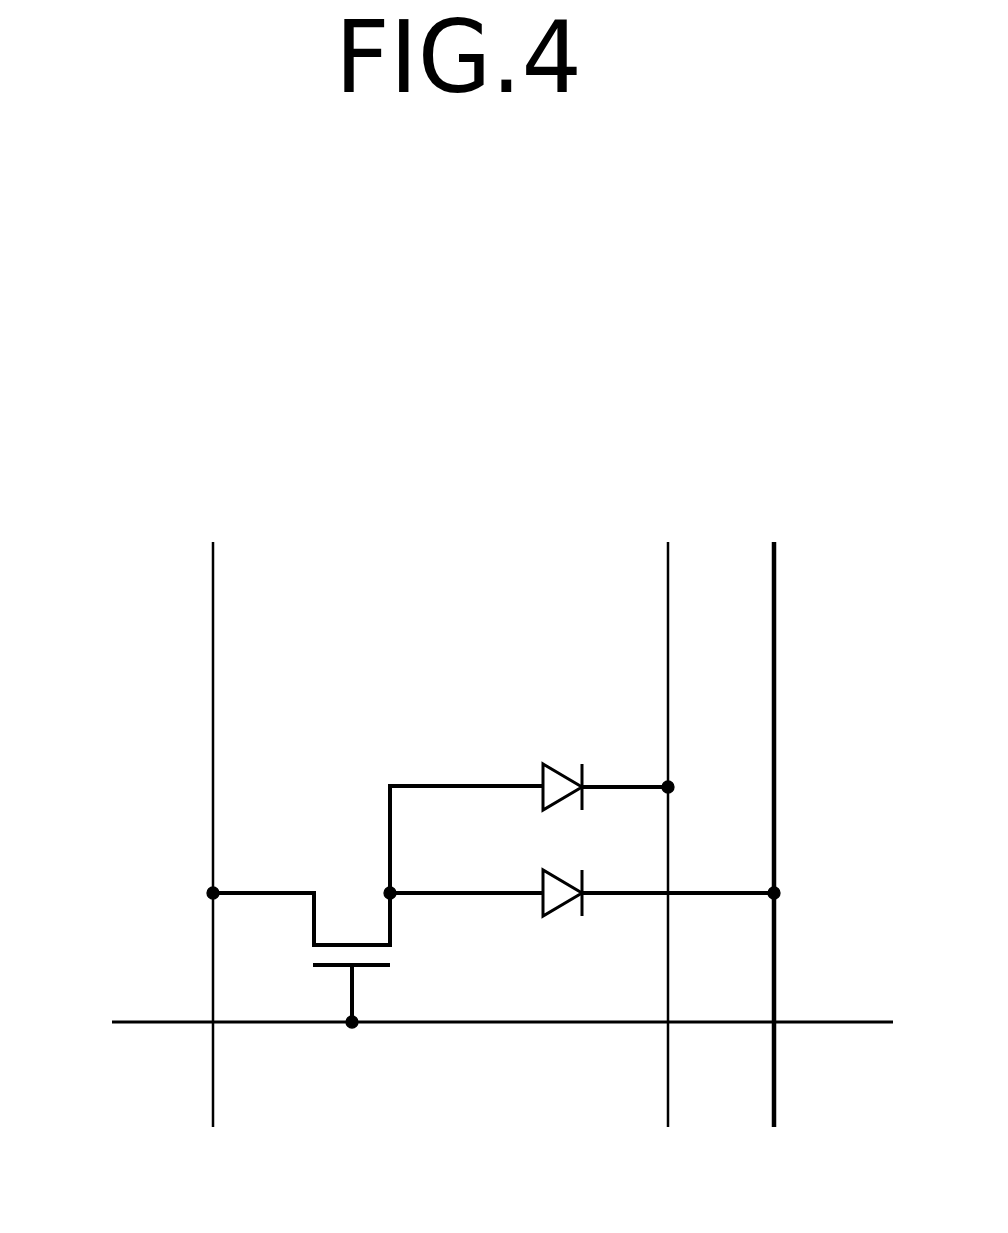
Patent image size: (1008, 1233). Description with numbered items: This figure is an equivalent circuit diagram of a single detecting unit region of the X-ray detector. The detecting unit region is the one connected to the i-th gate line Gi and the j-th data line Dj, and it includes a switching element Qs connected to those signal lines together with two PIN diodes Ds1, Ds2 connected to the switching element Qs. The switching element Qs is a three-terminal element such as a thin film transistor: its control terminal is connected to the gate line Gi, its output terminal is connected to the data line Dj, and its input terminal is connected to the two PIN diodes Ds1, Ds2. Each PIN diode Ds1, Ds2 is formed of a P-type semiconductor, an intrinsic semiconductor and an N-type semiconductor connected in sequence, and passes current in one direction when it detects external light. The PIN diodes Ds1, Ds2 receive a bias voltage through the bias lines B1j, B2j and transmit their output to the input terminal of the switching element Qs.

The data line Dj is at (210, 795).
The bias line B1j is at (673, 795).
The bias line B2j is at (780, 795).
The gate line Gi is at (472, 1022).
The switching element Qs is at (375, 907).
The PIN diode Ds1 is at (603, 749).
The PIN diode Ds2 is at (656, 929).